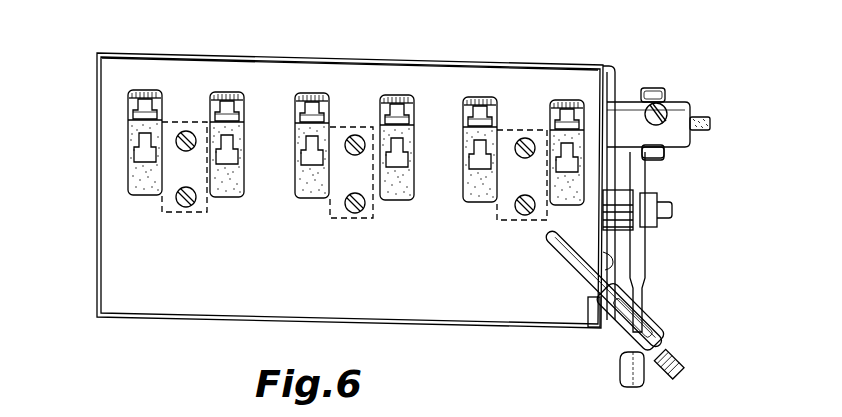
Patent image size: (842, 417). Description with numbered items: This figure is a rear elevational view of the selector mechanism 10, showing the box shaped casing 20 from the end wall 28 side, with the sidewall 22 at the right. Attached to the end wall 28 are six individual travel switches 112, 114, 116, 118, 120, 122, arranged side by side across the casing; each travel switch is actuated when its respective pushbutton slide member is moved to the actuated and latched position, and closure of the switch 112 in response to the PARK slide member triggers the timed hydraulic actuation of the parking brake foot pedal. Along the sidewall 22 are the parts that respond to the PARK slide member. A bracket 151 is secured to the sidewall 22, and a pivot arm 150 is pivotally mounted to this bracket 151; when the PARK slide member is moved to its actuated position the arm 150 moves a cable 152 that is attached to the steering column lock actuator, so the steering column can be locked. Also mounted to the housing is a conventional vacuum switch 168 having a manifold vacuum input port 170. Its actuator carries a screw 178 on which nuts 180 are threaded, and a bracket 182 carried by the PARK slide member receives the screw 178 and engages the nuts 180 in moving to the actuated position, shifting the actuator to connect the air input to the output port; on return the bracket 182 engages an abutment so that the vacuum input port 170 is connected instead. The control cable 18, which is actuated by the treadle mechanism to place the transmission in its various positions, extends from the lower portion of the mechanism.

The selector mechanism 10 is at (186, 30).
The box shaped casing 20 is at (221, 330).
The end wall 28 is at (322, 64).
The sidewall 22 is at (604, 66).
The travel switch 112 is at (580, 131).
The travel switch 114 is at (487, 140).
The travel switch 116 is at (410, 138).
The travel switch 118 is at (325, 135).
The travel switch 120 is at (232, 130).
The travel switch 122 is at (136, 132).
The vacuum switch 168 is at (660, 90).
The manifold vacuum input port 170 is at (712, 124).
The screw 178 is at (662, 115).
The nuts 180 is at (645, 108).
The bracket 182 is at (678, 137).
The pivot arm 150 is at (583, 272).
The bracket 151 is at (603, 247).
The cable 152 is at (653, 358).
The control cable 18 is at (624, 374).